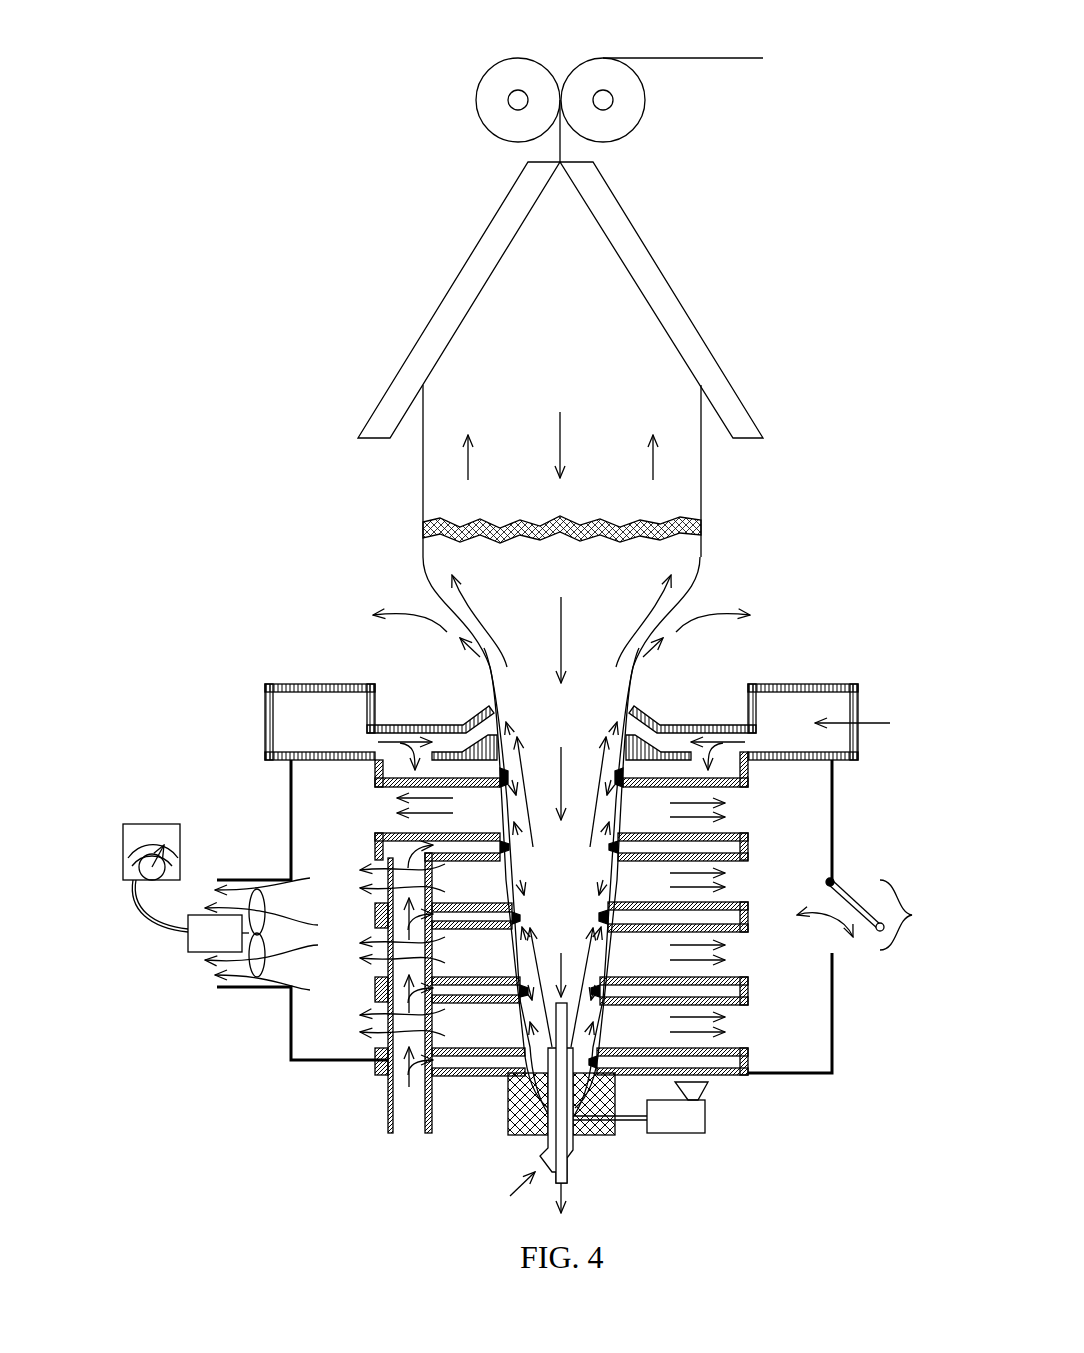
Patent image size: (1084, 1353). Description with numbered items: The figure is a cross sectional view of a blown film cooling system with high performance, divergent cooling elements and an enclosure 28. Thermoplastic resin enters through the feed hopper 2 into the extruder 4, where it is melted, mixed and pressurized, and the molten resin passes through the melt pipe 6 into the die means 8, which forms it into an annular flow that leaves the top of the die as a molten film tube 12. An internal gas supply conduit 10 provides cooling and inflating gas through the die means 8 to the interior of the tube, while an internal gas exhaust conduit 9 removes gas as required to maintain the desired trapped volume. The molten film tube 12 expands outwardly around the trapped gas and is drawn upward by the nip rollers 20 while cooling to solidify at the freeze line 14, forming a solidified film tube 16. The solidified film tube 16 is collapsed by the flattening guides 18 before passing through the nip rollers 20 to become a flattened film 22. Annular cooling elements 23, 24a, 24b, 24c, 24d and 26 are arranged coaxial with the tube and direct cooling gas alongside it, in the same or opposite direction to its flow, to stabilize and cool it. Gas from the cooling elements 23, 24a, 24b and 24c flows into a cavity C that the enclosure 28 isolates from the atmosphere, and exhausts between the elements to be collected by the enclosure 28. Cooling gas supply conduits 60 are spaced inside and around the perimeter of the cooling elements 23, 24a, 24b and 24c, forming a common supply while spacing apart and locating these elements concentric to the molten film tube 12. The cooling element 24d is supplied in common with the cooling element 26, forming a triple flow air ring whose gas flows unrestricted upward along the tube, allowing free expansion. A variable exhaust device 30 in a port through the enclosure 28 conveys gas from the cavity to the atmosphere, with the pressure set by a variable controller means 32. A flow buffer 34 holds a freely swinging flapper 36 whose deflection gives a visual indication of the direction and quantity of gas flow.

The feed hopper 2 is at (697, 1090).
The extruder 4 is at (686, 1120).
The melt pipe 6 is at (630, 1122).
The die means 8 is at (510, 1100).
The internal gas exhaust conduit 9 is at (568, 1172).
The internal gas supply conduit 10 is at (538, 1152).
The molten film tube 12 is at (702, 557).
The freeze line 14 is at (703, 523).
The solidified film tube 16 is at (703, 488).
The flattening guides 18 is at (442, 298).
The nip rollers 20 is at (483, 128).
The flattened film 22 is at (640, 57).
The cooling element 23 is at (730, 1060).
The cooling element 24a is at (733, 992).
The cooling element 24b is at (733, 917).
The cooling element 24c is at (733, 847).
The cooling element 24d is at (733, 772).
The cooling element 26 is at (308, 710).
The enclosure 28 is at (290, 1020).
The variable exhaust device 30 is at (188, 940).
The variable controller means 32 is at (123, 862).
The flow buffer 34 is at (880, 915).
The flapper 36 is at (838, 882).
The cooling gas supply conduits 60 is at (387, 1040).